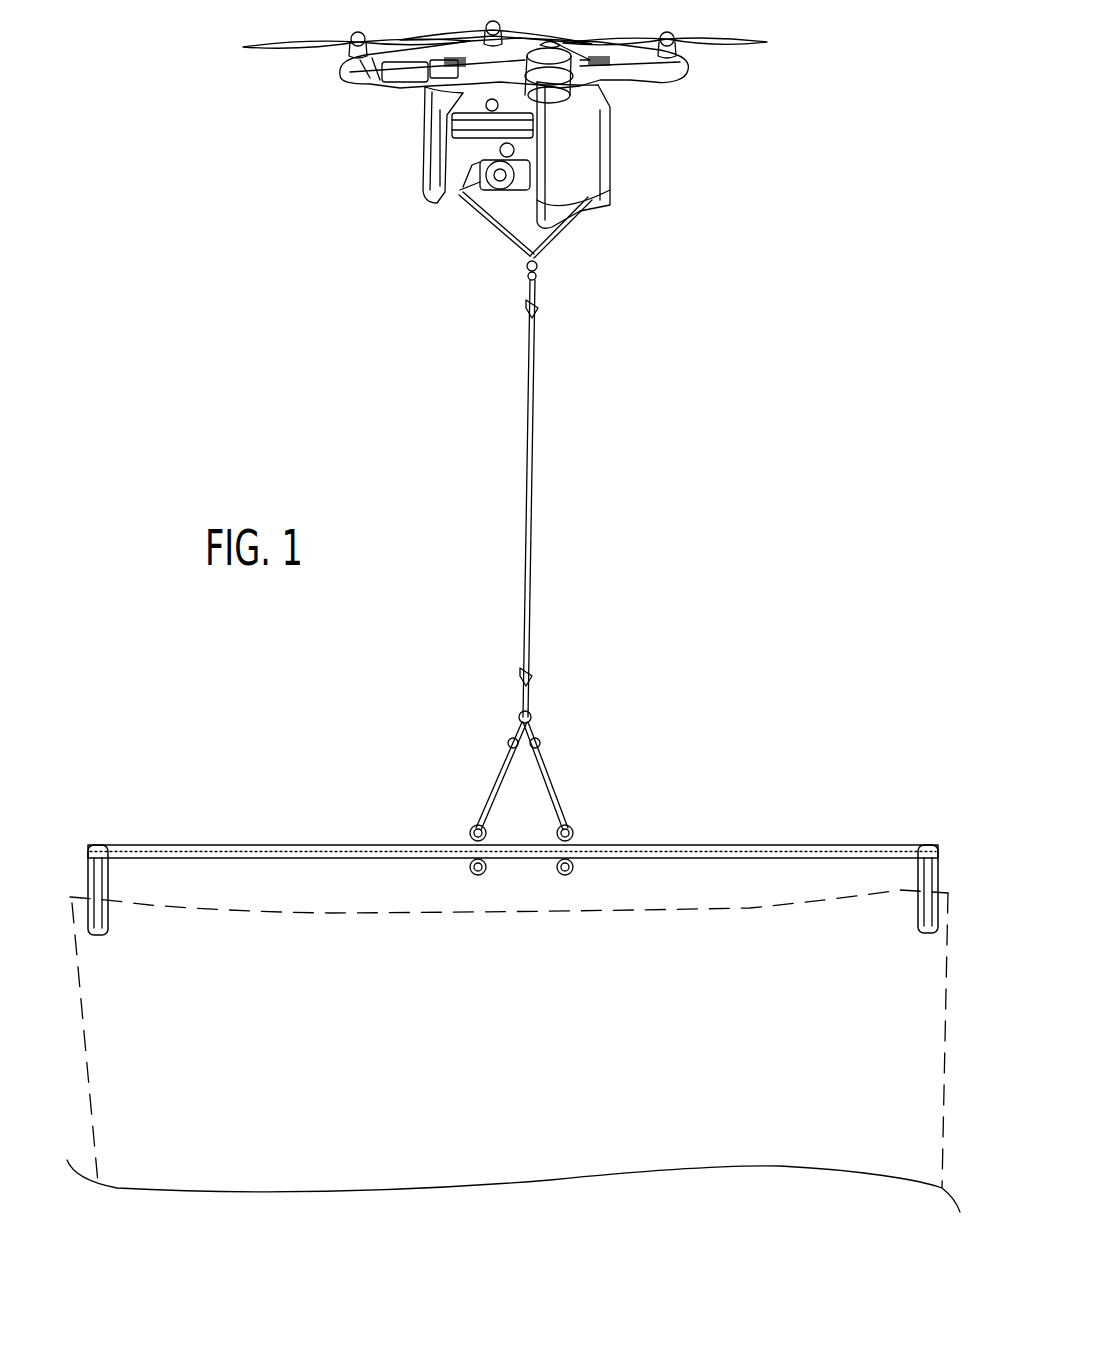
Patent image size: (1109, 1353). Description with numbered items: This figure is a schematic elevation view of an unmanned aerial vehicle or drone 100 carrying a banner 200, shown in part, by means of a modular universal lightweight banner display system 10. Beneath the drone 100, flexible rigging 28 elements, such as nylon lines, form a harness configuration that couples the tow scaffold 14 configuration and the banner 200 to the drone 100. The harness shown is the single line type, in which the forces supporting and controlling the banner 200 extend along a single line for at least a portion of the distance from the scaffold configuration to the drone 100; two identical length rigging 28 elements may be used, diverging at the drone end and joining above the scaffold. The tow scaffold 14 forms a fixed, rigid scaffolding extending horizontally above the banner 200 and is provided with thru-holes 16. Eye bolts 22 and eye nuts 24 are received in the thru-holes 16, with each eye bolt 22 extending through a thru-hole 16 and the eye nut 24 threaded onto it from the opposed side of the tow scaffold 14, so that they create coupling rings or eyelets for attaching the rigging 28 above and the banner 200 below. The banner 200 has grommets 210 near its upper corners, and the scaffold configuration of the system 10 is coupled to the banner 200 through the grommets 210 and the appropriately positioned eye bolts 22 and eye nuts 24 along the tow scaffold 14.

The unmanned aerial vehicle banner display system 10 is at (715, 535).
The unmanned aerial vehicle 100 is at (618, 97).
The flexible rigging elements 28 is at (487, 228).
The eye nuts 24 is at (475, 823).
The eye bolts 22 is at (463, 868).
The tow scaffold 14 is at (213, 848).
The thru-holes 16 is at (785, 852).
The grommets 210 is at (76, 897).
The banner 200 is at (735, 1024).